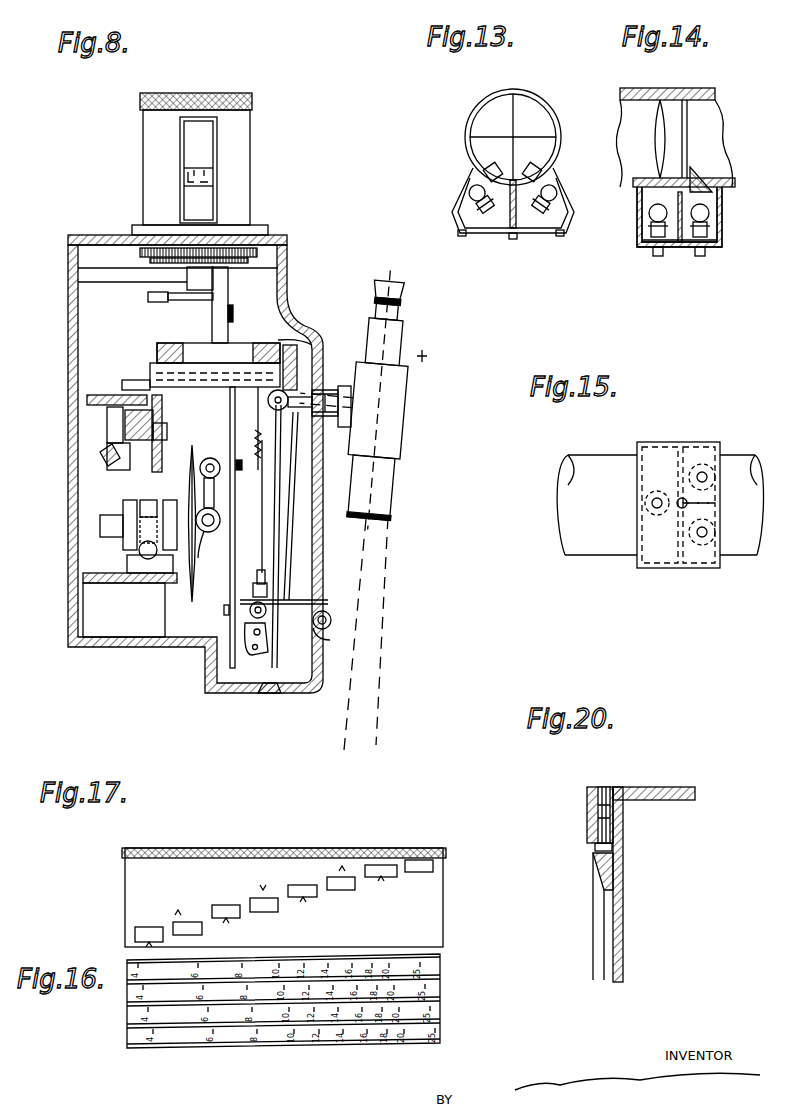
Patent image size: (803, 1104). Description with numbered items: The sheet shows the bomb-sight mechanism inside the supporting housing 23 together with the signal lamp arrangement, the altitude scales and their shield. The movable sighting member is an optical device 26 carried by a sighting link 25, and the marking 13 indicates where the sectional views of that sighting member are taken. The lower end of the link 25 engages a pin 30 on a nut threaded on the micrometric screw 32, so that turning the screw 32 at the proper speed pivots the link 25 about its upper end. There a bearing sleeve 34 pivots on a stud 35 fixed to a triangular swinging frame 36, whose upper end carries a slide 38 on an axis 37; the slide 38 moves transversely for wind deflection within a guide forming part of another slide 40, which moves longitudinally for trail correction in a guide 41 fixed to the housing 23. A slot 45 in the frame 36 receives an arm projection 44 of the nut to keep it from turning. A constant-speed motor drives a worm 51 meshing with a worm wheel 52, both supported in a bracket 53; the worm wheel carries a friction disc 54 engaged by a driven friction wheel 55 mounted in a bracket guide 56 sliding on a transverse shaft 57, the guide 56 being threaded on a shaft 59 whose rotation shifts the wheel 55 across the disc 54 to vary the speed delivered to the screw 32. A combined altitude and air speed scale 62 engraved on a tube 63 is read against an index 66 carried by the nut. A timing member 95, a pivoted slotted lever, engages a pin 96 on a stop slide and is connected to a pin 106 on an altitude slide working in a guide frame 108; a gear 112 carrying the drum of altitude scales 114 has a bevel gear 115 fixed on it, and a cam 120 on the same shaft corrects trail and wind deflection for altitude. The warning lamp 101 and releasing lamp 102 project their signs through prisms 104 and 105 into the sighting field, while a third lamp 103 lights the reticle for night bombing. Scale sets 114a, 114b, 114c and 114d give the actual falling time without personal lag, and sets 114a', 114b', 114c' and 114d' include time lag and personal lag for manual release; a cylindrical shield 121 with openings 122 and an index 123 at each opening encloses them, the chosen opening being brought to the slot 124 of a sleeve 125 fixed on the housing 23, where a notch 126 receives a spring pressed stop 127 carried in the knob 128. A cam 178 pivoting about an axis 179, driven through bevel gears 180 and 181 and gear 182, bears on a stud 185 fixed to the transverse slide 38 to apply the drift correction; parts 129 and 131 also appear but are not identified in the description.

In FIG. 8, the section line 13 is at (394, 550).
In FIG. 8, the housing 23 is at (68, 330).
In FIG. 8, the sighting link 25 is at (290, 533).
In FIG. 8, the optical device 26 is at (404, 428).
In FIG. 13, the optical device 26 is at (548, 110).
In FIG. 14, the optical device 26 is at (620, 98).
In FIG. 15, the optical device 26 is at (572, 558).
In FIG. 8, the pin 30 is at (292, 610).
In FIG. 8, the micrometric screw 32 is at (235, 655).
In FIG. 8, the bearing sleeve 34 is at (318, 390).
In FIG. 8, the stud 35 is at (325, 395).
In FIG. 8, the triangular swinging frame 36 is at (247, 467).
In FIG. 8, the axis 37 is at (258, 421).
In FIG. 8, the slide 38 is at (268, 402).
In FIG. 8, the slide 40 is at (196, 328).
In FIG. 8, the guide 41 is at (283, 345).
In FIG. 8, the arm projection 44 is at (253, 590).
In FIG. 8, the slot 45 is at (257, 572).
In FIG. 8, the worm 51 is at (140, 565).
In FIG. 8, the worm wheel 52 is at (143, 498).
In FIG. 8, the bracket 53 is at (127, 540).
In FIG. 8, the friction disc 54 is at (196, 576).
In FIG. 8, the friction wheel 55 is at (209, 545).
In FIG. 8, the bracket guide 56 is at (214, 492).
In FIG. 8, the transverse shaft 57 is at (214, 516).
In FIG. 8, the shaft 59 is at (212, 458).
In FIG. 8, the combined altitude and air speed scale 62 is at (330, 614).
In FIG. 8, the tube 63 is at (330, 636).
In FIG. 8, the index 66 is at (322, 600).
In FIG. 8, the timing member 95 is at (262, 528).
In FIG. 8, the pin 96 is at (224, 610).
In FIG. 13, the lamp 101 is at (466, 240).
In FIG. 14, the lamp 101 is at (664, 250).
In FIG. 15, the lamp 101 is at (702, 470).
In FIG. 13, the releasing signal lamp 102 is at (560, 198).
In FIG. 14, the releasing signal lamp 102 is at (706, 250).
In FIG. 15, the releasing signal lamp 102 is at (702, 540).
In FIG. 14, the third lamp 103 is at (645, 248).
In FIG. 15, the third lamp 103 is at (660, 510).
In FIG. 13, the prism 104 is at (476, 168).
In FIG. 14, the prism 104 is at (705, 165).
In FIG. 13, the prism 105 is at (545, 168).
In FIG. 14, the prism 105 is at (712, 185).
In FIG. 8, the pin 106 is at (233, 312).
In FIG. 8, the guide frame 108 is at (228, 290).
In FIG. 8, the gear 112 is at (268, 262).
In FIG. 8, the altitude scales 114 is at (205, 178).
In FIG. 16, the altitude scales 114 is at (290, 1048).
In FIG. 16, the altitude scale set 114a is at (242, 984).
In FIG. 16, the altitude scale set 114b is at (241, 1012).
In FIG. 16, the altitude scale set 114c is at (241, 1033).
In FIG. 16, the altitude scale set 114d is at (241, 1055).
In FIG. 16, the altitude scale set 114a' is at (320, 966).
In FIG. 16, the altitude scale set 114b' is at (325, 992).
In FIG. 16, the altitude scale set 114c' is at (327, 1017).
In FIG. 16, the altitude scale set 114d' is at (330, 1040).
In FIG. 8, the bevel gear 115 is at (140, 258).
In FIG. 8, the cam 120 is at (155, 302).
In FIG. 20, the cylindrical shield 121 is at (623, 913).
In FIG. 17, the cylindrical shield 121 is at (125, 870).
In FIG. 17, the openings 122 is at (173, 930).
In FIG. 8, the index 123 is at (195, 170).
In FIG. 17, the index 123 is at (178, 916).
In FIG. 8, the slot 124 is at (217, 148).
In FIG. 20, the slot 124 is at (593, 950).
In FIG. 20, the sleeve 125 is at (593, 870).
In FIG. 20, the notch 126 is at (595, 848).
In FIG. 20, the spring pressed stop 127 is at (587, 833).
In FIG. 8, the knob 128 is at (252, 100).
In FIG. 20, the knob 128 is at (650, 787).
In FIG. 8, the spring 129 is at (232, 464).
In FIG. 8, the pin 131 is at (345, 376).
In FIG. 8, the cam 178 is at (90, 397).
In FIG. 8, the axis 179 is at (110, 426).
In FIG. 8, the bevel gear 180 is at (100, 455).
In FIG. 8, the bevel gear 181 is at (140, 465).
In FIG. 8, the gear 182 is at (162, 410).
In FIG. 8, the stud 185 is at (122, 382).